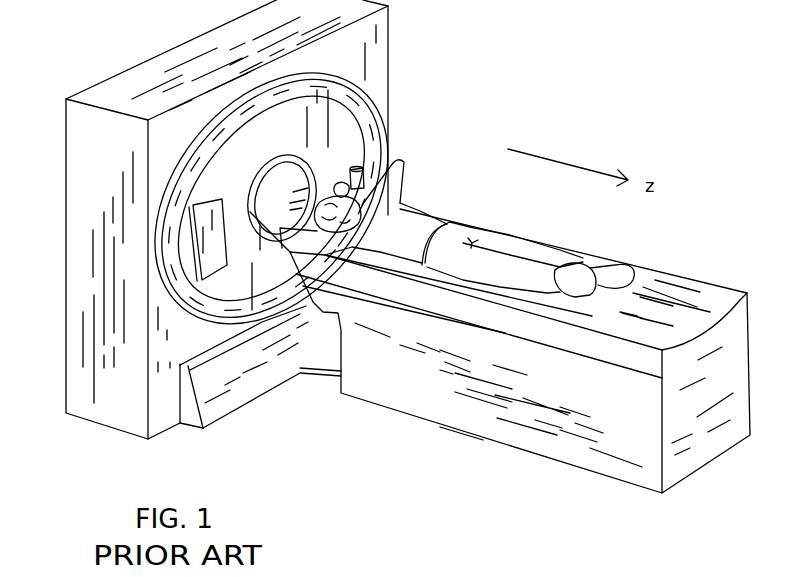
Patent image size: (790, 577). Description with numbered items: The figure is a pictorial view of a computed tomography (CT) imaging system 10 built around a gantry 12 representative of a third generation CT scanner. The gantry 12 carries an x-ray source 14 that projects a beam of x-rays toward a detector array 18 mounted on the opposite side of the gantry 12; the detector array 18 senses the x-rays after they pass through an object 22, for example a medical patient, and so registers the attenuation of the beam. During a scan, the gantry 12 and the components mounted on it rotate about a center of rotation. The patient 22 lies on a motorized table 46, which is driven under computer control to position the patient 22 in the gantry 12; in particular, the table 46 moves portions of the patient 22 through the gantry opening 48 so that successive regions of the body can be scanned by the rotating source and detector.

The computed tomography (CT) imaging system 10 is at (313, 397).
The gantry 12 is at (111, 167).
The x-ray source 14 is at (364, 174).
The detector array 18 is at (207, 267).
The object 22 is at (417, 213).
The motorized table 46 is at (422, 398).
The gantry opening 48 is at (305, 175).